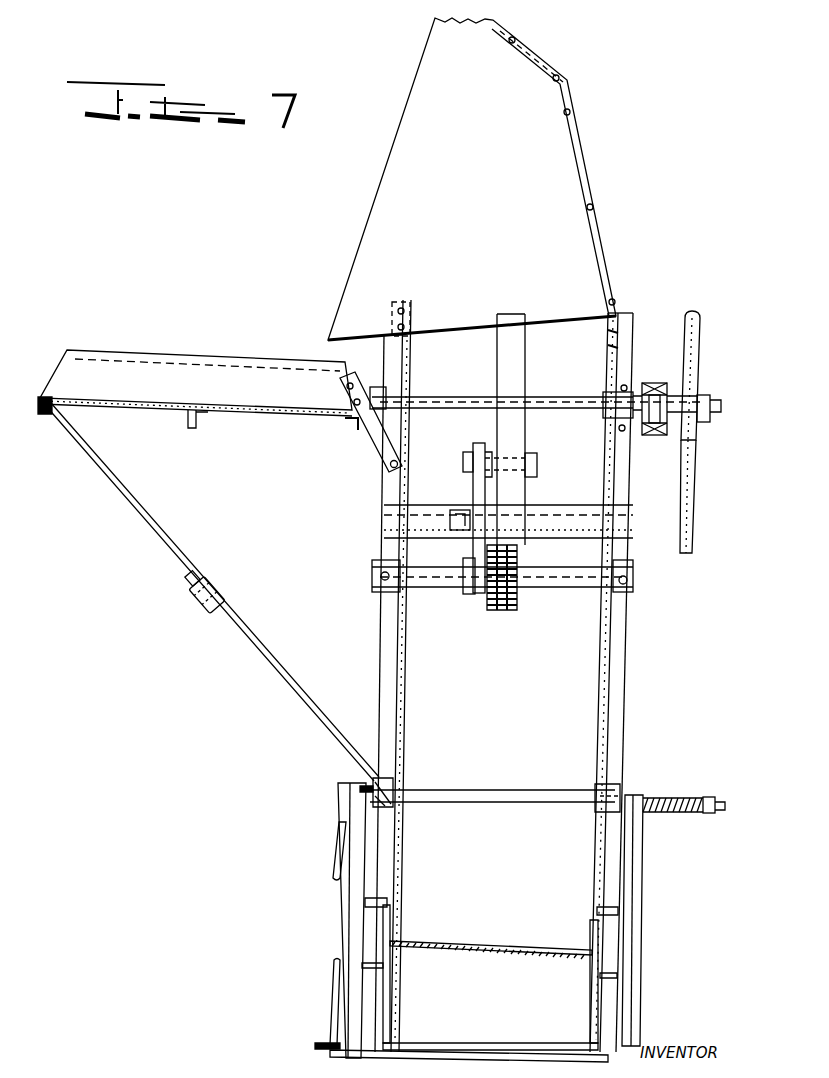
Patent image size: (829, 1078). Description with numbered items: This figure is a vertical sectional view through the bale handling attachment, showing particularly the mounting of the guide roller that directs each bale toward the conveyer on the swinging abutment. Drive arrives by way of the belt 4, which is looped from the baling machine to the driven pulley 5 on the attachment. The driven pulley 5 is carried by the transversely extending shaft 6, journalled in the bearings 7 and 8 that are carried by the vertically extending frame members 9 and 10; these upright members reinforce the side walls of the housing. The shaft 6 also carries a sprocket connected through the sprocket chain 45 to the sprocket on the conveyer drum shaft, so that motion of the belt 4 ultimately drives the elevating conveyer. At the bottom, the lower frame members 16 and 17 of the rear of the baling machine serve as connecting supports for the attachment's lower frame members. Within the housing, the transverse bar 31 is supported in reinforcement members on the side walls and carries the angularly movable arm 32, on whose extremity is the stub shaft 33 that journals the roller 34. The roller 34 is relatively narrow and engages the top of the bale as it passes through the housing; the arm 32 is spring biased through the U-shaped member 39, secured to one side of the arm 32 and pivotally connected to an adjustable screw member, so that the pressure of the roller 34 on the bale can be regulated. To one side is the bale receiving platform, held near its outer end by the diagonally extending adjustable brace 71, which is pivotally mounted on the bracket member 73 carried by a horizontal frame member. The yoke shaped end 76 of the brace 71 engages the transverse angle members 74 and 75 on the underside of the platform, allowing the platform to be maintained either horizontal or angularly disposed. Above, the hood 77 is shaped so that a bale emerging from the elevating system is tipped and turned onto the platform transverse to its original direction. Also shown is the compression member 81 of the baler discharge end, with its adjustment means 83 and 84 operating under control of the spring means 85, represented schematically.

The belt 4 is at (683, 548).
The driven pulley 5 is at (712, 342).
The transversely extending shaft 6 is at (712, 400).
The bearing 7 is at (413, 362).
The bearing 8 is at (640, 352).
The vertically extending frame member 9 is at (385, 620).
The vertically extending frame member 10 is at (613, 700).
The lower frame member 16 is at (403, 1005).
The lower frame member 17 is at (590, 1035).
The transverse bar 31 is at (568, 586).
The angularly movable arm 32 is at (473, 597).
The stub shaft 33 is at (537, 463).
The roller 34 is at (505, 380).
The U-shaped member 39 is at (450, 520).
The sprocket chain 45 is at (654, 442).
The adjustable brace 71 is at (247, 645).
The bracket member 73 is at (375, 780).
The transverse angle member 74 is at (192, 412).
The transverse angle member 75 is at (40, 416).
The yoke shaped end 76 is at (147, 512).
The hood 77 is at (565, 195).
The compression member 81 is at (352, 893).
The adjustment means 83 is at (340, 817).
The adjustment means 84 is at (332, 1018).
The spring means 85 is at (673, 788).